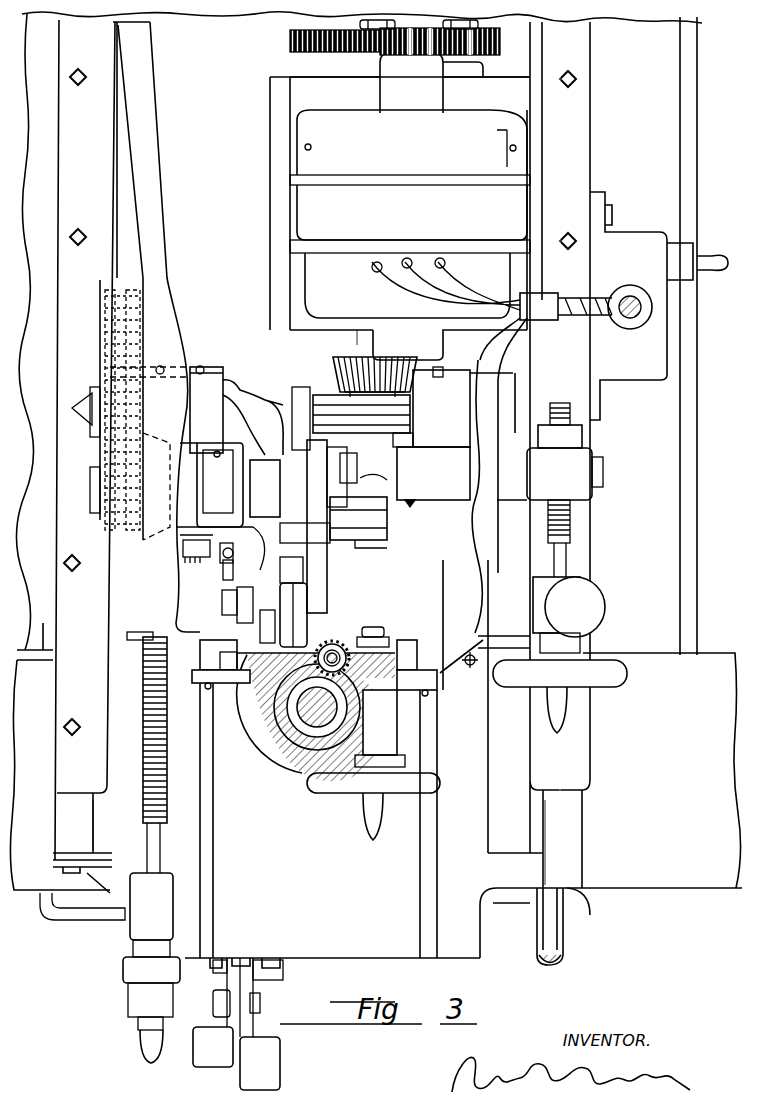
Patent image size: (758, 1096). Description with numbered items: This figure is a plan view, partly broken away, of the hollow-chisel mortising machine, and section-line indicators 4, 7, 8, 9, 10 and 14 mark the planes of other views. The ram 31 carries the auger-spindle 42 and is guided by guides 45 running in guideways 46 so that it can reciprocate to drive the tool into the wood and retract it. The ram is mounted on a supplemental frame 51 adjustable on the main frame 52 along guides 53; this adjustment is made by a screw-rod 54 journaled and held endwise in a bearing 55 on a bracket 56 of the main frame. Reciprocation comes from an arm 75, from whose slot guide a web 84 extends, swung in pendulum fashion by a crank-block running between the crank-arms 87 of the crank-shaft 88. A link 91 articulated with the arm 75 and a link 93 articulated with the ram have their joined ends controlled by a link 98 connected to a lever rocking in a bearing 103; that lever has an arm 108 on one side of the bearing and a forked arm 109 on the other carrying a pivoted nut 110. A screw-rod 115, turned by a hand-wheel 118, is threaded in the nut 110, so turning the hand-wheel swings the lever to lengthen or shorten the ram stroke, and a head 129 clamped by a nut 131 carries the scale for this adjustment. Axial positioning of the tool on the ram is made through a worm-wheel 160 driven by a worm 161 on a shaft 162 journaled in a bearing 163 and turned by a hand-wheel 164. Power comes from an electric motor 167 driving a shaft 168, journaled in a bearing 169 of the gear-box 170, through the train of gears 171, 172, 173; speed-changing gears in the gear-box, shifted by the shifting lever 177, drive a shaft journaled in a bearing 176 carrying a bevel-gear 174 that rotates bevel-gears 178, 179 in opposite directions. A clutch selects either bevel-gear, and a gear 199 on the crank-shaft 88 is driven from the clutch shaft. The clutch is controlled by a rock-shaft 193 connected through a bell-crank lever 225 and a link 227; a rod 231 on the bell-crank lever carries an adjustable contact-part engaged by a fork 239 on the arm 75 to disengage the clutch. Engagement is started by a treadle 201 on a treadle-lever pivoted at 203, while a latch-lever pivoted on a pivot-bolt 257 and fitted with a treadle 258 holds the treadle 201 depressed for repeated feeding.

The section line 4- 4 is at (527, 123).
The section line 7- 7 is at (300, 666).
The section line 8- 8 is at (152, 553).
The section line 9- 9 is at (560, 403).
The section line 10- 10 is at (508, 580).
The section line 14- 14 is at (360, 478).
The ram 31 is at (292, 755).
The auger-spindle 42 is at (296, 728).
The guides 45 is at (230, 657).
The guideways 46 is at (227, 683).
The supplemental frame 51 is at (158, 249).
The main frame 52 is at (670, 179).
The guides 53 is at (87, 827).
The screw-rod 54 is at (160, 792).
The bearing 55 is at (140, 927).
The bracket 56 is at (112, 898).
The arm 75 is at (270, 396).
The web 84 is at (253, 578).
The crank-arms 87 is at (243, 386).
The crank-shaft 88 is at (410, 420).
The link 91 is at (284, 640).
The link 93 is at (301, 573).
The link 98 is at (320, 522).
The bearing 103 is at (432, 492).
The arm 108 is at (388, 520).
The arm 109 is at (590, 460).
The nut 110 is at (585, 433).
The screw-rod 115 is at (570, 530).
The hand-wheel 118 is at (603, 682).
The head 129 is at (600, 601).
The nut 131 is at (580, 601).
The worm-wheel 160 is at (342, 642).
The worm 161 is at (392, 636).
The shaft 162 is at (376, 627).
The bearing 163 is at (388, 733).
The hand-wheel 164 is at (320, 788).
The electric motor 167 is at (300, 211).
The shaft 168 is at (388, 27).
The bearing 169 is at (362, 70).
The gear-box 170 is at (300, 110).
The gear 171 is at (417, 62).
The gear 172 is at (499, 50).
The gear 173 is at (292, 42).
The bevel-gear 174 is at (350, 357).
The bearing 176 is at (357, 338).
The shifting lever 177 is at (470, 665).
The bevel-gear 178 is at (333, 362).
The bevel-gear 179 is at (412, 388).
The rock-shaft 193 is at (388, 542).
The gear 199 is at (108, 370).
The treadle 201 is at (280, 1088).
The pivot 203 is at (213, 968).
The bell-crank lever 225 is at (213, 553).
The link 227 is at (393, 547).
The rod 231 is at (228, 582).
The fork 239 is at (222, 565).
The pivot-bolt 257 is at (213, 1003).
The treadle 258 is at (205, 1064).